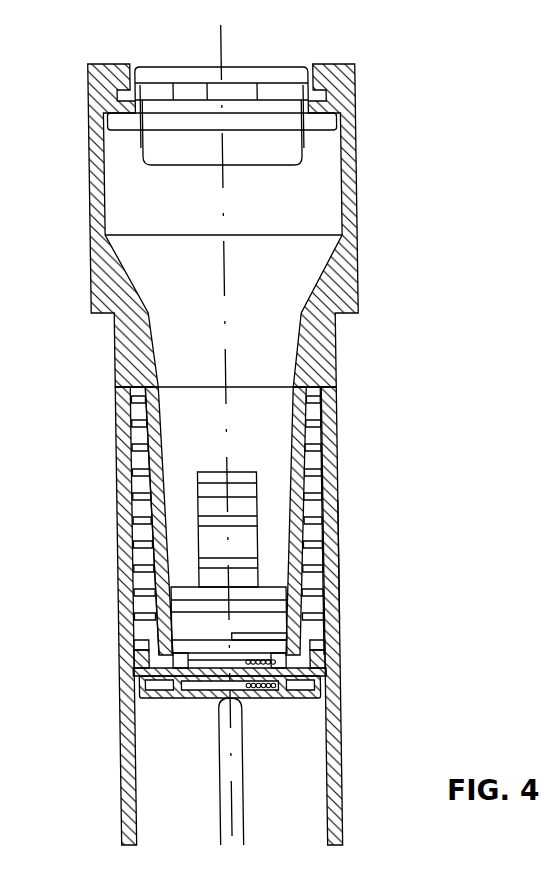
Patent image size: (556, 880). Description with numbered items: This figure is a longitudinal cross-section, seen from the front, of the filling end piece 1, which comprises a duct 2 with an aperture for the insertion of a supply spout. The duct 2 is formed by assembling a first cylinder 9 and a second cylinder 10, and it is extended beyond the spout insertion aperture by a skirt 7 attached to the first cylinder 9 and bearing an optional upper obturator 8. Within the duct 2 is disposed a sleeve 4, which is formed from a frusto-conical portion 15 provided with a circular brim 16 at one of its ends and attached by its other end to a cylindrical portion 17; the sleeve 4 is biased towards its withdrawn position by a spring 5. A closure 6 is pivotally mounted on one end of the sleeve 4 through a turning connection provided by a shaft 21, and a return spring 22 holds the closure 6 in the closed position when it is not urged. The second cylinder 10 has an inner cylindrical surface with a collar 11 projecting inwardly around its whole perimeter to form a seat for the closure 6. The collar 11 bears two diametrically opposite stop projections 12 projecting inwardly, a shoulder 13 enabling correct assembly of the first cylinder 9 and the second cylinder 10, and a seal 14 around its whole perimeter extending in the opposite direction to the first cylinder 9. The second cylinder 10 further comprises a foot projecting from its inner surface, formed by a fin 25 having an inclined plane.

The filling end piece 1 is at (422, 327).
The duct 2 is at (351, 576).
The sleeve 4 is at (139, 476).
The spring 5 is at (334, 492).
The closure 6 is at (158, 700).
The skirt 7 is at (96, 160).
The upper obturator 8 is at (295, 73).
The first cylinder 9 is at (333, 443).
The second cylinder 10 is at (336, 750).
The collar 11 is at (130, 655).
The stop projections 12 is at (214, 700).
The shoulder 13 is at (133, 640).
The seal 14 is at (132, 677).
The frusto-conical portion 15 is at (142, 421).
The circular brim 16 is at (131, 393).
The cylindrical portion 17 is at (335, 553).
The shaft 21 is at (283, 700).
The return spring 22 is at (250, 692).
The fin 25 is at (217, 793).